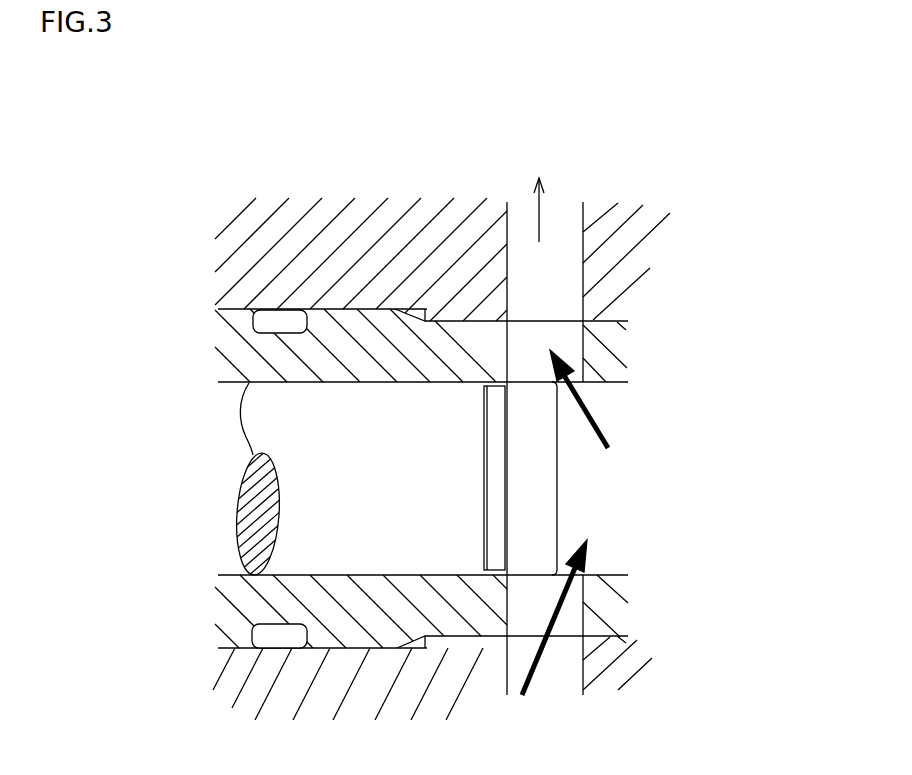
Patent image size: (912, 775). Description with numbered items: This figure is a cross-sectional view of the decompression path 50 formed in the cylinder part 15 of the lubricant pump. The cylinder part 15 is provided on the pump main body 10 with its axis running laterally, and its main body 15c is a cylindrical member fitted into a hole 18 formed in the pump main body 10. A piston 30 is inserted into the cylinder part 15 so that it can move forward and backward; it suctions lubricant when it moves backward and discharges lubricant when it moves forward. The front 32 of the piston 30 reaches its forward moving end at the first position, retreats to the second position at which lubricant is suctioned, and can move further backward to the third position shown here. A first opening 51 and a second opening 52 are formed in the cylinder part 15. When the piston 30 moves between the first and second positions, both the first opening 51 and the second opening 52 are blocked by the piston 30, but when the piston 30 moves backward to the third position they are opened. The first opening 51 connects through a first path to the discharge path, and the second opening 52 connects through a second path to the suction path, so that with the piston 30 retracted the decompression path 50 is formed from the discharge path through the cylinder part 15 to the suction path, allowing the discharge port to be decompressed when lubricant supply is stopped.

The pump main body 10 is at (630, 240).
The cylinder part 15 is at (333, 350).
The main body of the cylinder part 15c is at (380, 350).
The hole 18 is at (222, 311).
The piston 30 is at (440, 497).
The front of the piston 32 is at (557, 459).
The decompression path 50 is at (559, 297).
The first opening 51 is at (567, 613).
The second opening 52 is at (560, 337).